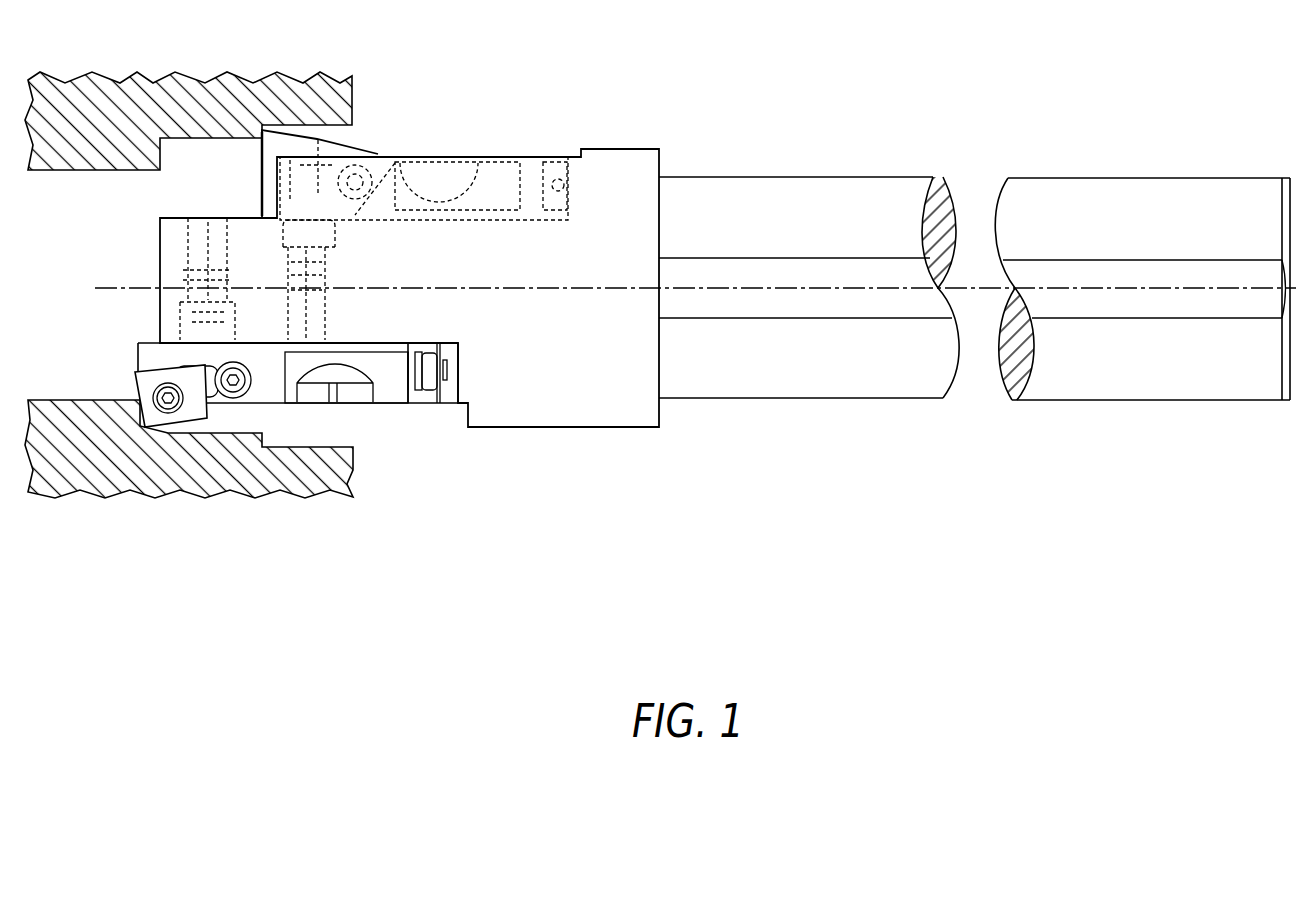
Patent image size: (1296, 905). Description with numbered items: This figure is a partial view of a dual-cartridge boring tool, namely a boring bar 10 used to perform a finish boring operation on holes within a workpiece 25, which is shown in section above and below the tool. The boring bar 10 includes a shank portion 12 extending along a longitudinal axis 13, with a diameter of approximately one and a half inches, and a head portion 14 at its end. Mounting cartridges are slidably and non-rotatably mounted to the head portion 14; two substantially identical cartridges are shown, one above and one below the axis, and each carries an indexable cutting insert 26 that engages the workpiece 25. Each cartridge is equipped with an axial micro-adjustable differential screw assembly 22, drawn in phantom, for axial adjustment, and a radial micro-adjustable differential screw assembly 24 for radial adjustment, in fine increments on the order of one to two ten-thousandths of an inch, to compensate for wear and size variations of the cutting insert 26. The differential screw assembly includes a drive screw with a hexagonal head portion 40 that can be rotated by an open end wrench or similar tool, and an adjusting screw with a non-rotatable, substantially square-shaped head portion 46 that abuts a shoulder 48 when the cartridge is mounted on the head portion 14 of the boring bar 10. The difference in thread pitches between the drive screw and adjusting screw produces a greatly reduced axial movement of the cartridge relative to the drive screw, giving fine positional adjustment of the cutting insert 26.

The boring bar 10 is at (697, 304).
The shank portion 12 is at (974, 240).
The longitudinal axis 13 is at (1203, 282).
The head portion 14 is at (605, 160).
The axial micro-adjustable differential screw assembly 22 is at (445, 414).
The radial micro-adjustable differential screw assembly 24 is at (178, 262).
The workpiece 25 is at (74, 462).
The indexable cutting insert 26 is at (165, 437).
The hexagonal head portion 40 is at (417, 395).
The square-shaped head portion 46 is at (452, 394).
The shoulder 48 is at (460, 343).